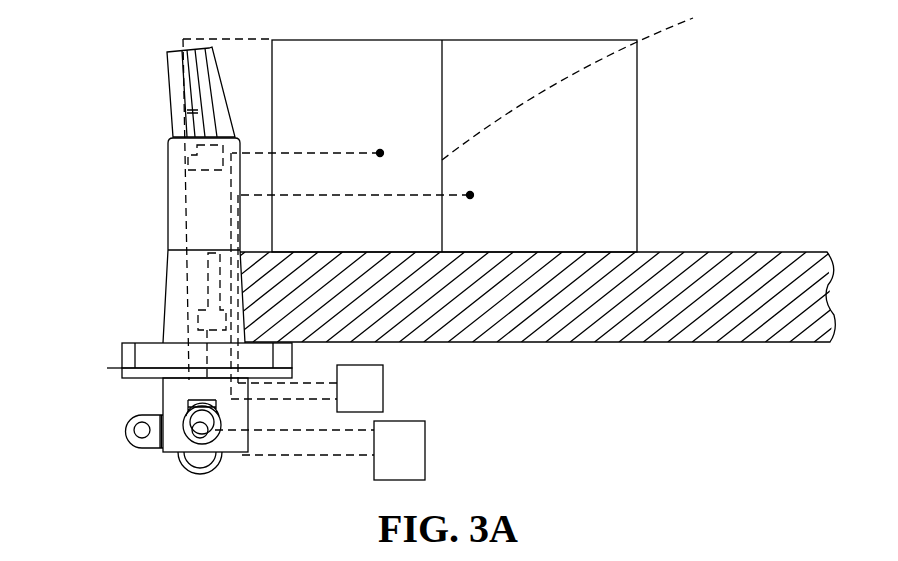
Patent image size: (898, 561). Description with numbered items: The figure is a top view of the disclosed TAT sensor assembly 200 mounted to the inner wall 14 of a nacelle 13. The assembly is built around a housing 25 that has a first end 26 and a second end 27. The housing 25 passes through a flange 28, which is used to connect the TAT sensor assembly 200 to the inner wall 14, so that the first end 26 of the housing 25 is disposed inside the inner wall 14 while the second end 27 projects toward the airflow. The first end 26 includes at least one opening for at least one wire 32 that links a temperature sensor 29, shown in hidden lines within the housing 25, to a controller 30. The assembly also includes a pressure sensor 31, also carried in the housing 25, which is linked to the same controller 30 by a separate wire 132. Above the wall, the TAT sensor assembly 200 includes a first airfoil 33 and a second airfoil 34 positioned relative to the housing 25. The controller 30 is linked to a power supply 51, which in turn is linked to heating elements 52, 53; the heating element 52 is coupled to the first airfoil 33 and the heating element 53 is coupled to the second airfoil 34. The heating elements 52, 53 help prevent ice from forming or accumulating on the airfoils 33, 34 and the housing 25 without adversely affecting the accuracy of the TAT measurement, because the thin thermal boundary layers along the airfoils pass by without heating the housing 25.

The nacelle 13 is at (670, 250).
The inner wall 14 is at (684, 318).
The housing 25 is at (160, 257).
The first end 26 is at (163, 398).
The second end 27 is at (168, 145).
The flange 28 is at (120, 358).
The temperature sensor 29 is at (200, 170).
The controller 30 is at (425, 452).
The pressure sensor 31 is at (208, 303).
The wire 32 is at (290, 457).
The first airfoil 33 is at (637, 95).
The second airfoil 34 is at (582, 81).
The power supply 51 is at (383, 383).
The heating element 52 is at (470, 195).
The heating element 53 is at (380, 153).
The wire 132 is at (352, 433).
The TAT sensor assembly 200 is at (692, 128).